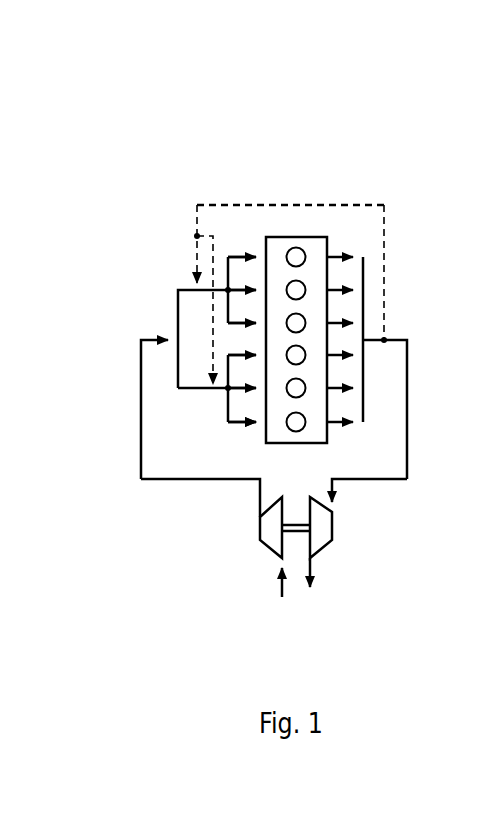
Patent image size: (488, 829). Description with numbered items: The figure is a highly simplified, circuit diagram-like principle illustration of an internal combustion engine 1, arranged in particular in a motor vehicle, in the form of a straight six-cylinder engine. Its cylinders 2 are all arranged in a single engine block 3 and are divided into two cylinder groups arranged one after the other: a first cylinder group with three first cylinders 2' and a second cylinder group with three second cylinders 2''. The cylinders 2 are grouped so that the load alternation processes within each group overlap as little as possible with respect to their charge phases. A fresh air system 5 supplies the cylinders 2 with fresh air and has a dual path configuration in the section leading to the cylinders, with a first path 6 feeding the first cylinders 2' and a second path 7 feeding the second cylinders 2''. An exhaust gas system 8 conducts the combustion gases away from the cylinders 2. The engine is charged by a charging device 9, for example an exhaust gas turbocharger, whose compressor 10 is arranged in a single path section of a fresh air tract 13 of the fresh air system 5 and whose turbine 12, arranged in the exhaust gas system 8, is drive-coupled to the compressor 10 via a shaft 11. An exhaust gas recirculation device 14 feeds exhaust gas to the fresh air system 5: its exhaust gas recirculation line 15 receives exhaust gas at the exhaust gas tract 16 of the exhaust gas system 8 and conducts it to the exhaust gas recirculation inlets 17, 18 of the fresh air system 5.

The internal combustion engine 1 is at (382, 166).
The cylinders 2 is at (385, 338).
The first cylinders 2' is at (383, 289).
The second cylinders 2'' is at (385, 389).
The engine block 3 is at (374, 295).
The fresh air system 5 is at (133, 370).
The first path 6 is at (167, 362).
The second path 7 is at (203, 390).
The exhaust gas system 8 is at (415, 367).
The charging device 9 is at (345, 528).
The compressor 10 is at (263, 556).
The shaft 11 is at (297, 535).
The turbine 12 is at (330, 558).
The fresh air tract 13 is at (200, 480).
The exhaust gas recirculation device 14 is at (398, 234).
The exhaust gas recirculation line 15 is at (288, 287).
The exhaust gas tract 16 is at (409, 455).
The exhaust gas recirculation inlet 17 is at (196, 287).
The exhaust gas recirculation inlet 18 is at (210, 390).